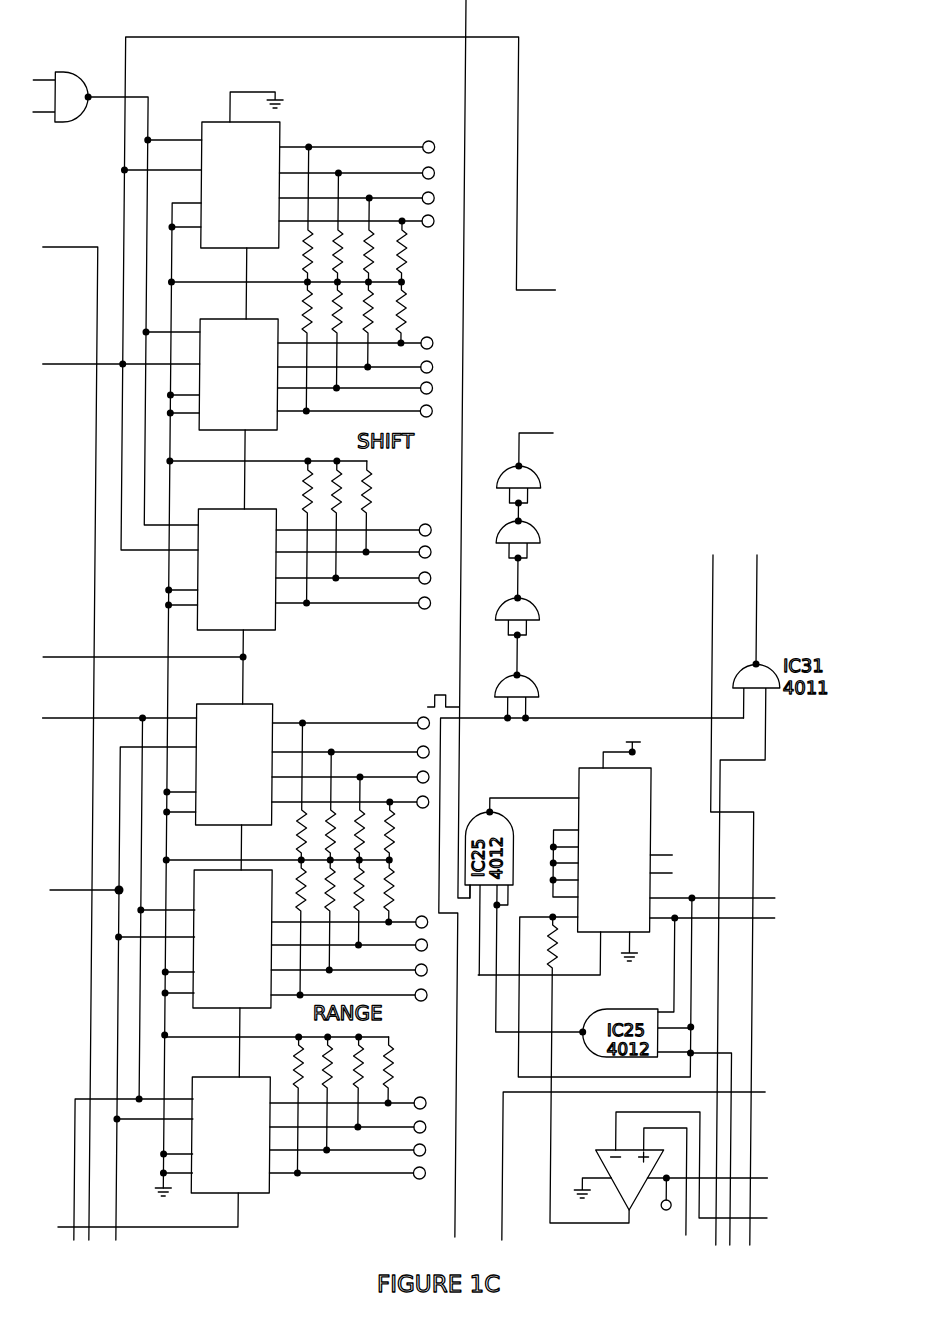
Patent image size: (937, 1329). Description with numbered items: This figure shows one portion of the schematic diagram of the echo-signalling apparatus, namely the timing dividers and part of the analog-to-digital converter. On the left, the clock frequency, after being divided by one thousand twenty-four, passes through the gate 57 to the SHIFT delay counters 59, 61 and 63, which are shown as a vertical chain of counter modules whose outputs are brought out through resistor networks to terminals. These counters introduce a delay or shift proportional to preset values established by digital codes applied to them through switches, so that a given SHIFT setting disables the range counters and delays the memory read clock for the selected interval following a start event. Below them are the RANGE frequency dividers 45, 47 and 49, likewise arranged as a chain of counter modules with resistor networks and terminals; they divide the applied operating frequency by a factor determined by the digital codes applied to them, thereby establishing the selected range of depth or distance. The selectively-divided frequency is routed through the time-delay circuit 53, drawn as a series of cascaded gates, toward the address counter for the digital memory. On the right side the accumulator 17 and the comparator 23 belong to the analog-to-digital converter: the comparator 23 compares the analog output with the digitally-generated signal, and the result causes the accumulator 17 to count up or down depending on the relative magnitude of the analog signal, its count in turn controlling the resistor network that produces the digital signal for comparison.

The gate 57 is at (70, 72).
The SHIFT delay counter 59 is at (221, 120).
The SHIFT delay counter 61 is at (220, 318).
The SHIFT delay counter 63 is at (221, 508).
The RANGE frequency divider 45 is at (269, 704).
The RANGE frequency divider 47 is at (208, 870).
The RANGE frequency divider 49 is at (210, 1077).
The time-delay circuit 53 is at (581, 626).
The accumulator 17 is at (586, 772).
The comparator 23 is at (606, 1151).